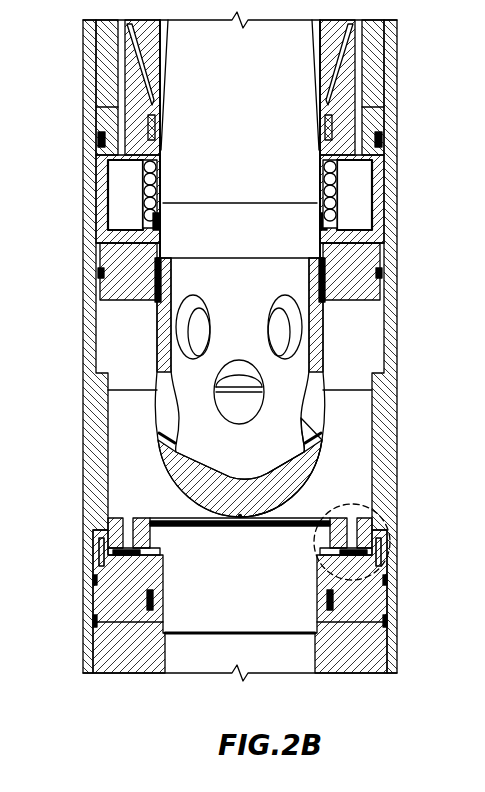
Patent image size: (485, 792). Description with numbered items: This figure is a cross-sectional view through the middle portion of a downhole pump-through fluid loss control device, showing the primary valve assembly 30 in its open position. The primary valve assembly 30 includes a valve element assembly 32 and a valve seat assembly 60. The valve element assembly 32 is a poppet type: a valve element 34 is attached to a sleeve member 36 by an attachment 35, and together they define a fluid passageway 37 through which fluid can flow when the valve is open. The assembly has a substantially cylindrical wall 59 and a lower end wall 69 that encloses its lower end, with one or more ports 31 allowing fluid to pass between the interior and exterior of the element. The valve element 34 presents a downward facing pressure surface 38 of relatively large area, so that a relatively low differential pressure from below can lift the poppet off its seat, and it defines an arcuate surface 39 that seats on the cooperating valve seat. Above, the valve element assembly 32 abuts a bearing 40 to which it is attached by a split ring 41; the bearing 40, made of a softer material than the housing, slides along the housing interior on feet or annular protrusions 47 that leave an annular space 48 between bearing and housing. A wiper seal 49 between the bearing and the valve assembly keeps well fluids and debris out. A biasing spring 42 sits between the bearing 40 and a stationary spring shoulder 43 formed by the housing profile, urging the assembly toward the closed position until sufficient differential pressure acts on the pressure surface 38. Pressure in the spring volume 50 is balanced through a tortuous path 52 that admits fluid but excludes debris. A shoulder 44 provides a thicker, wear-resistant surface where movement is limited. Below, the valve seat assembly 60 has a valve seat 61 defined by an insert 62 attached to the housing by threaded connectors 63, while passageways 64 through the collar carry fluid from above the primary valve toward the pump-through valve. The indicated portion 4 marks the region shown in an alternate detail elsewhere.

The indicated portion 4 is at (385, 518).
The primary valve assembly 30 is at (408, 297).
The ports 31 is at (243, 388).
The valve element assembly 32 is at (76, 366).
The valve element 34 is at (160, 448).
The attachment 35 is at (100, 272).
The sleeve member 36 is at (160, 127).
The fluid passageway 37 is at (277, 153).
The pressure surface 38 is at (160, 503).
The arcuate surface 39 is at (165, 480).
The bearing 40 is at (105, 215).
The split ring 41 is at (340, 214).
The biasing spring 42 is at (340, 183).
The spring shoulder 43 is at (343, 170).
The shoulder 44 is at (110, 394).
The annular protrusions 47 is at (100, 142).
The annular space 48 is at (123, 181).
The wiper seal 49 is at (388, 254).
The spring volume 50 is at (100, 167).
The tortuous path 52 is at (122, 104).
The cylindrical wall 59 is at (317, 335).
The valve seat assembly 60 is at (73, 523).
The valve seat 61 is at (115, 550).
The insert 62 is at (160, 622).
The threaded connectors 63 is at (100, 560).
The passageways 64 is at (150, 524).
The lower end wall 69 is at (302, 465).